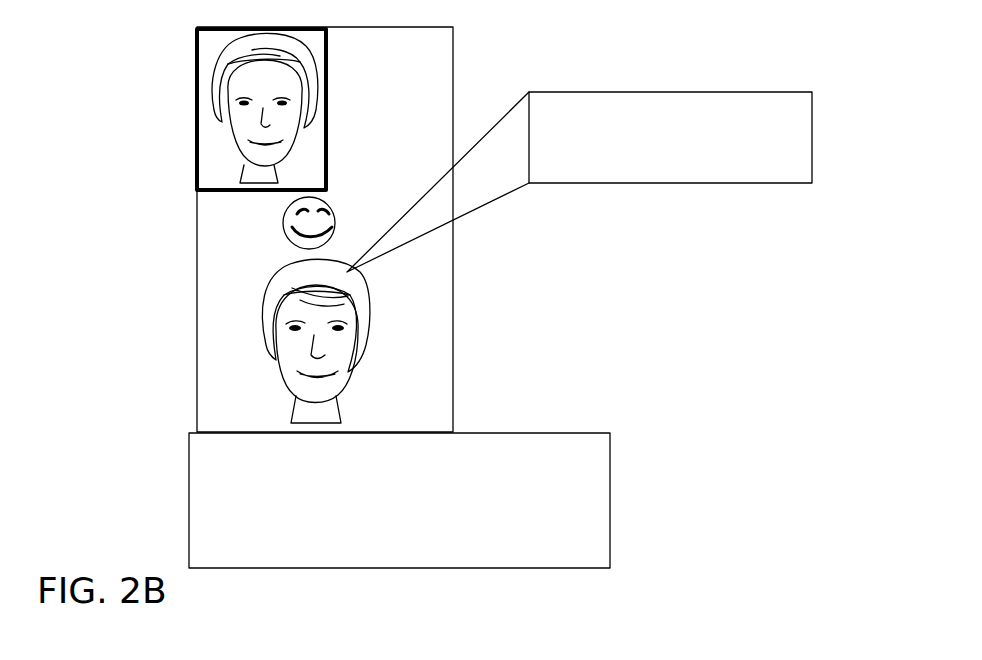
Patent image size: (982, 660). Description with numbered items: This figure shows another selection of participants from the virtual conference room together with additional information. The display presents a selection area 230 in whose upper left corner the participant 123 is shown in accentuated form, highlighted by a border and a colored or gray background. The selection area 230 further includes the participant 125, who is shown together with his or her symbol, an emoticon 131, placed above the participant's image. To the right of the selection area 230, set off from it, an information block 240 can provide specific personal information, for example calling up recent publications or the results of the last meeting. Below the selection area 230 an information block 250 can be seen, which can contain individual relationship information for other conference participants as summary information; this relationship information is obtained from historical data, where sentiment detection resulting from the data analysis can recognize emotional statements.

The participant 123 is at (228, 138).
The participant 125 is at (278, 365).
The emotion indicator icon 131 is at (285, 217).
The selection area 230 is at (452, 323).
The information block 240 is at (727, 183).
The information block 250 is at (189, 503).